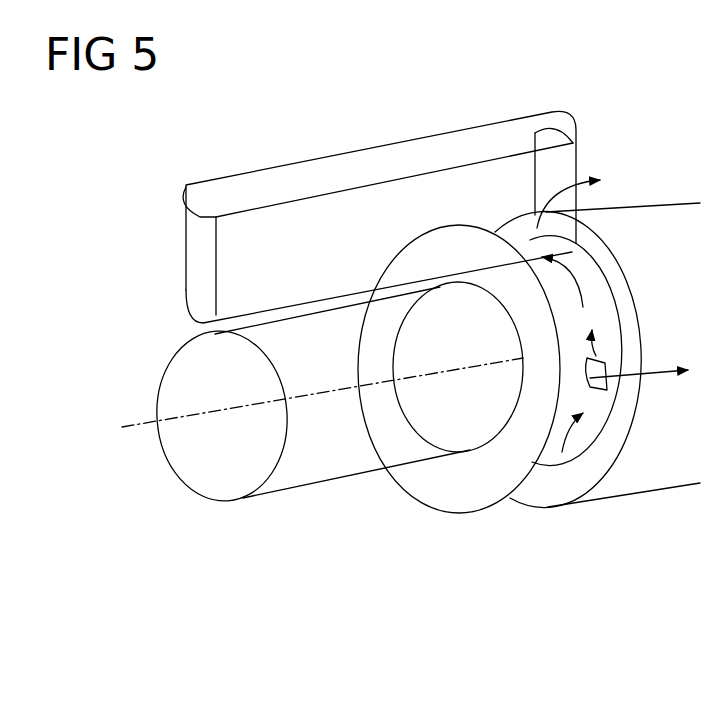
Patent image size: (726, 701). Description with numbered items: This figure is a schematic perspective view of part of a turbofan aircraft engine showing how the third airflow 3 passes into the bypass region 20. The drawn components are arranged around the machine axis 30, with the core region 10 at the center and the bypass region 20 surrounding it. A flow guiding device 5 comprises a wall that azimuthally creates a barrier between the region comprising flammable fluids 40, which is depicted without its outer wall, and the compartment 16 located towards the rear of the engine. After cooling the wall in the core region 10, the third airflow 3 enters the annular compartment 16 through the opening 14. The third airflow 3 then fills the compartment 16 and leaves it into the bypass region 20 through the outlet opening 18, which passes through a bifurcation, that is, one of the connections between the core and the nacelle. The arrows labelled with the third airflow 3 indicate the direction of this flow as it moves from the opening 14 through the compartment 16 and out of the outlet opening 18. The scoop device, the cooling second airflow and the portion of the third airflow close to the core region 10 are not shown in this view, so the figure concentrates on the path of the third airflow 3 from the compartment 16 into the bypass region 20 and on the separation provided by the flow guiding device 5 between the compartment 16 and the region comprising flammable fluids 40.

The third airflow 3 is at (583, 185).
The flow guiding device 5 is at (465, 478).
The core region 10 is at (218, 450).
The openings for third airflow 14 is at (608, 360).
The compartment 16 is at (533, 492).
The outlet opening 18 is at (577, 168).
The bypass region 20 is at (621, 181).
The machine axis 30 is at (133, 428).
The region comprising flammable fluids 40 is at (345, 511).